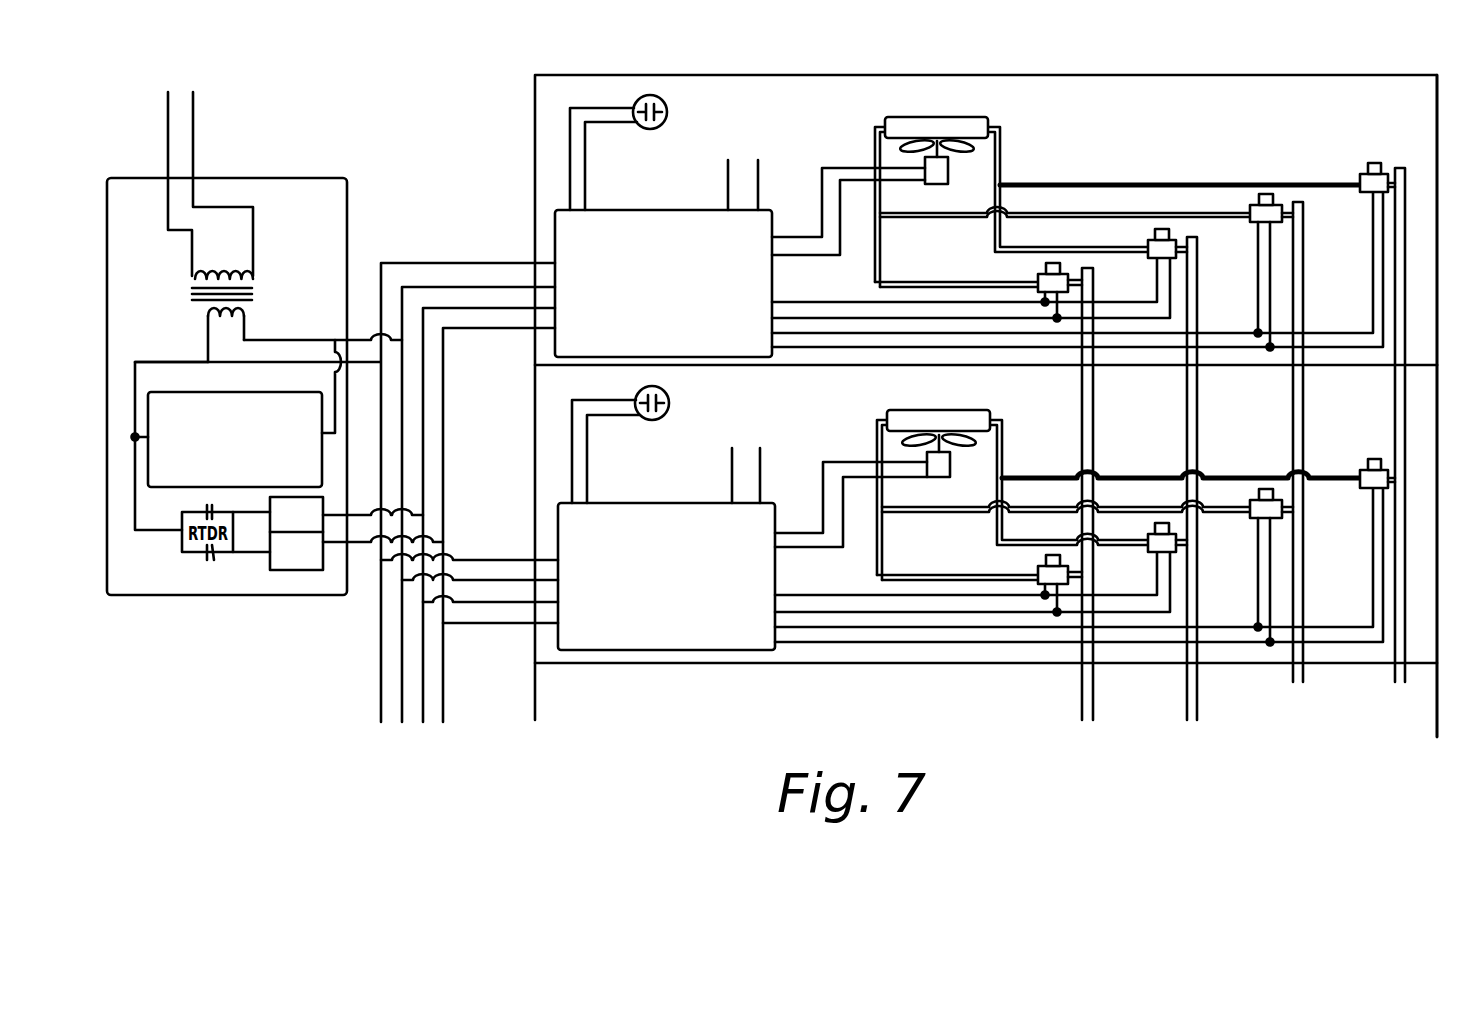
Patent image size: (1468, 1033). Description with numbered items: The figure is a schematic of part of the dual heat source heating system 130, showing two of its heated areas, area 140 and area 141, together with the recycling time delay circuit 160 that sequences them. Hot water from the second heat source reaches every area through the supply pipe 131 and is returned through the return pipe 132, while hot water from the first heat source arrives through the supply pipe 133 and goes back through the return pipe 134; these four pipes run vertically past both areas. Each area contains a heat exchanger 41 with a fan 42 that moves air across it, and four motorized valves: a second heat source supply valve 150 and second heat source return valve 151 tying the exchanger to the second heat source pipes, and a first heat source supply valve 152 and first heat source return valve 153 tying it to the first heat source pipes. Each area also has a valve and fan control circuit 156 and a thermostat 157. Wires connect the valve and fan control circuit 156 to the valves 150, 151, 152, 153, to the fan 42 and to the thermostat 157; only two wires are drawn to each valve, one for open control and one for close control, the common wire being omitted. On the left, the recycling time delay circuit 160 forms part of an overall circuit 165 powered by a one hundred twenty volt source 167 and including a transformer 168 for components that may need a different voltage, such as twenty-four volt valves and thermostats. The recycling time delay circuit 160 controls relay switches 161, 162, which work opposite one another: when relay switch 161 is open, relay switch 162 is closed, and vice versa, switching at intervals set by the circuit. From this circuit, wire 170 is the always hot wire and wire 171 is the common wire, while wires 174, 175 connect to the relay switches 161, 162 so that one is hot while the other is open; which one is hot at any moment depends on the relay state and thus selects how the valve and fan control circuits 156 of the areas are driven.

The heat exchanger 41 is at (943, 123).
The fan 42 is at (933, 183).
The dual heat source heating system 130 is at (1248, 62).
The supply pipe 131 is at (1403, 280).
The return pipe 132 is at (1303, 400).
The supply pipe 133 is at (1197, 400).
The return pipe 134 is at (1092, 403).
The area 140 is at (1430, 98).
The area 141 is at (1428, 640).
The second heat source supply valve 150 is at (1375, 168).
The second heat source return valve 151 is at (1252, 203).
The first heat source supply valve 152 is at (1152, 240).
The first heat source return valve 153 is at (1040, 277).
The valve and fan control circuit 156 is at (773, 293).
The thermostat 157 is at (663, 108).
The recycling time delay circuit 160 is at (247, 395).
The relay switch 161 is at (207, 512).
The relay switch 162 is at (207, 562).
The overall circuit 165 is at (303, 187).
The 120 volt source 167 is at (178, 168).
The transformer 168 is at (257, 290).
The always hot wire 170 is at (408, 263).
The common wire 171 is at (455, 288).
The wire 174 is at (465, 310).
The wire 175 is at (517, 345).